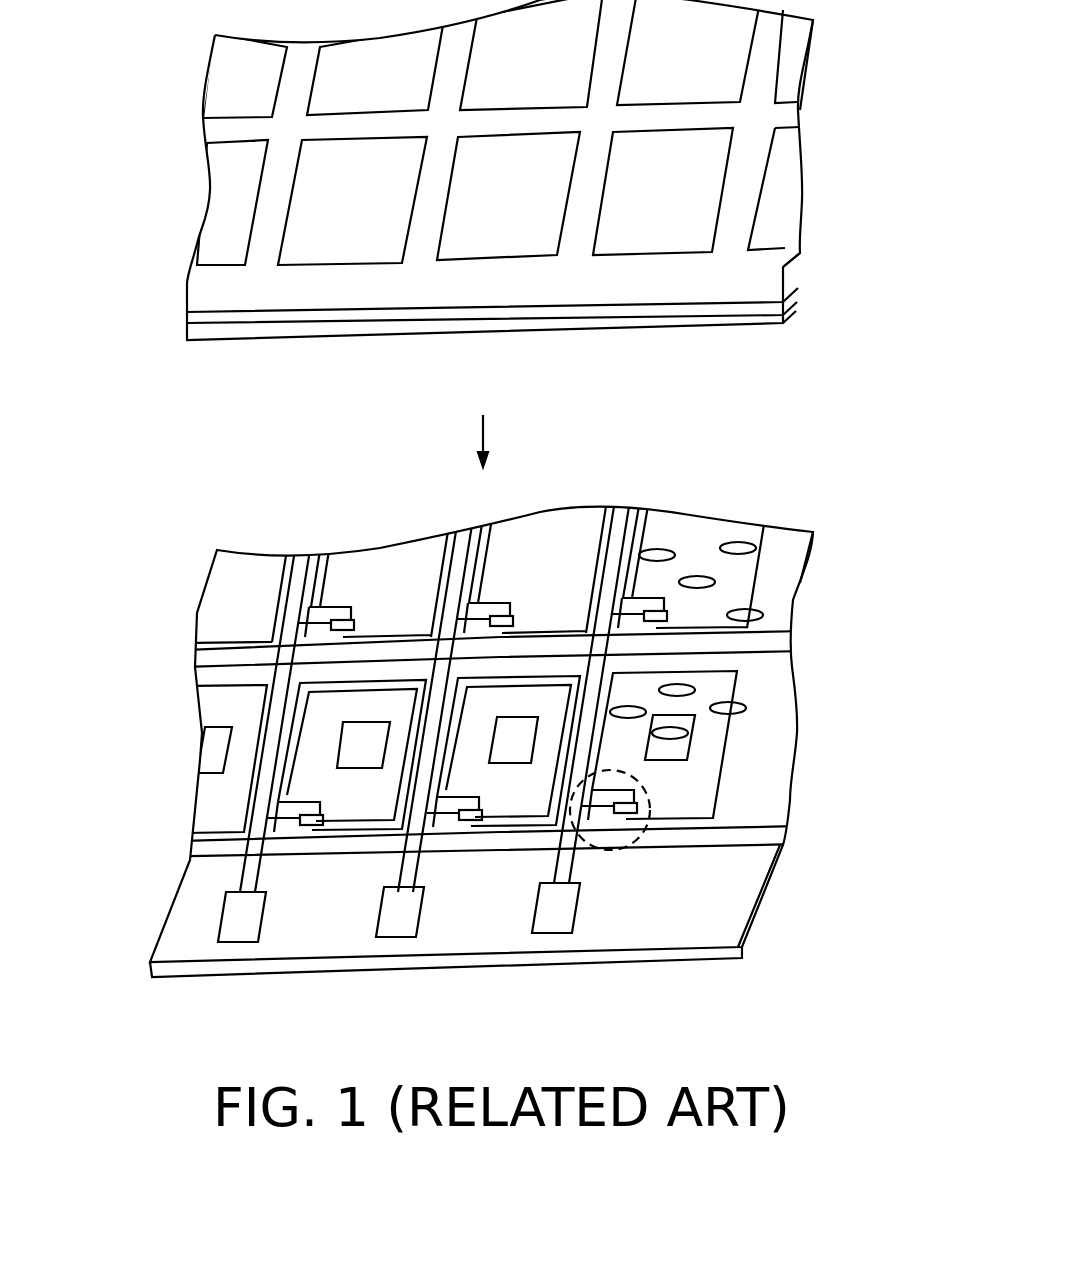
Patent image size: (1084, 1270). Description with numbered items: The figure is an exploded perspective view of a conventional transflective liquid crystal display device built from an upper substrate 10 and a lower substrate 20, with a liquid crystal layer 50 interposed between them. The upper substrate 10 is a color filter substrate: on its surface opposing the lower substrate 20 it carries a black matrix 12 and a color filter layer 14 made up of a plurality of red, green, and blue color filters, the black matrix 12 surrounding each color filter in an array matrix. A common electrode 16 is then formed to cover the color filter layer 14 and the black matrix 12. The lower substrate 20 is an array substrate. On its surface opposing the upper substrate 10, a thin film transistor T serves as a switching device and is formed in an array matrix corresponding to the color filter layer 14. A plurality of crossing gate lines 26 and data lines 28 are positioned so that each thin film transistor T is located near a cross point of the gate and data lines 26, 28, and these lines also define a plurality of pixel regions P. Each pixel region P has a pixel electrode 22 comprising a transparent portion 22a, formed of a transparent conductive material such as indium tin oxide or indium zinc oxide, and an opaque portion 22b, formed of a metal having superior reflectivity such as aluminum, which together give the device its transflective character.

The upper substrate 10 is at (740, 283).
The black matrix 12 is at (793, 118).
The color filter layer 14 is at (710, 178).
The common electrode 16 is at (740, 318).
The lower substrate 20 is at (747, 948).
The pixel electrode 22 is at (722, 800).
The transparent portion 22a is at (700, 713).
The opaque portion 22b is at (693, 777).
The gate line 26 is at (753, 837).
The data line 28 is at (550, 866).
The liquid crystal layer 50 is at (750, 608).
The pixel region P is at (743, 740).
The thin film transistor T is at (615, 853).